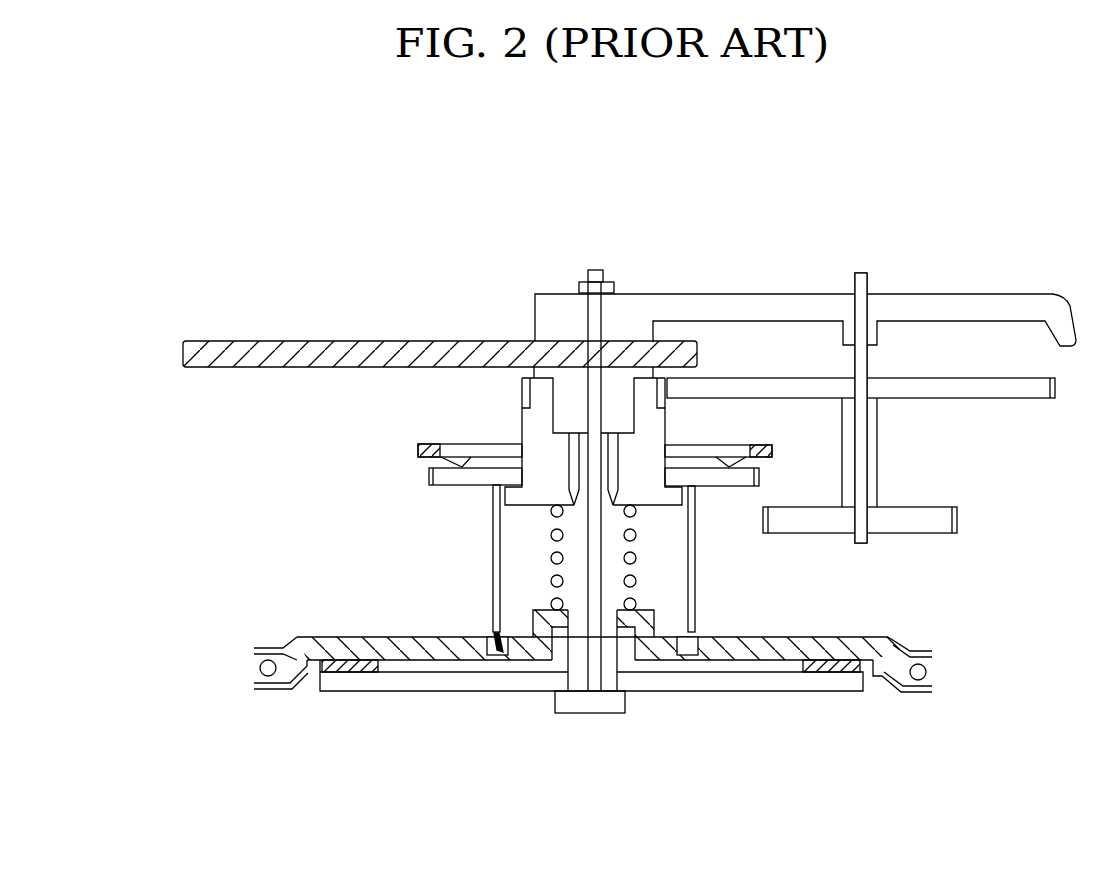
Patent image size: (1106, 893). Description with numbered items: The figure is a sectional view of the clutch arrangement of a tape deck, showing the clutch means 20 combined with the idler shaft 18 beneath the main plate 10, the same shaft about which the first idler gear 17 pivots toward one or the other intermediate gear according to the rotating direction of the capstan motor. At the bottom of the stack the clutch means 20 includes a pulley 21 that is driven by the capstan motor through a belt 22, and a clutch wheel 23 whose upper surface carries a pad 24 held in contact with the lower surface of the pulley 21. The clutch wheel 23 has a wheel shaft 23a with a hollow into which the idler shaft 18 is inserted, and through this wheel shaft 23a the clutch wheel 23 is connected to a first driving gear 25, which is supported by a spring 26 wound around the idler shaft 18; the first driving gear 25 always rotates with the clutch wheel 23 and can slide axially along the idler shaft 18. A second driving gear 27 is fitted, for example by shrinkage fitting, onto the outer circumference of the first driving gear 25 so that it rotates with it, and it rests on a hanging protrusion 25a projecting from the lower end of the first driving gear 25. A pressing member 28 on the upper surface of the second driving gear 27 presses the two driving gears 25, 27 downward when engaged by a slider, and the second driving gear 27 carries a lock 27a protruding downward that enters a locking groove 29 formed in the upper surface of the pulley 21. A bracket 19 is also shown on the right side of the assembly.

The main plate 10 is at (310, 350).
The first idler gear 17 is at (1023, 398).
The idler shaft 18 is at (596, 270).
The bracket 19 is at (921, 512).
The clutch means 20 is at (825, 728).
The pulley 21 is at (912, 688).
The belt 22 is at (930, 680).
The clutch wheel 23 is at (707, 688).
The wheel shaft 23a is at (575, 652).
The pad 24 is at (341, 673).
The first driving gear 25 is at (528, 427).
The hanging protrusion 25a is at (492, 494).
The spring 26 is at (548, 551).
The second driving gear 27 is at (731, 487).
The lock 27a is at (490, 578).
The pressing member 28 is at (737, 446).
The locking groove 29 is at (488, 632).